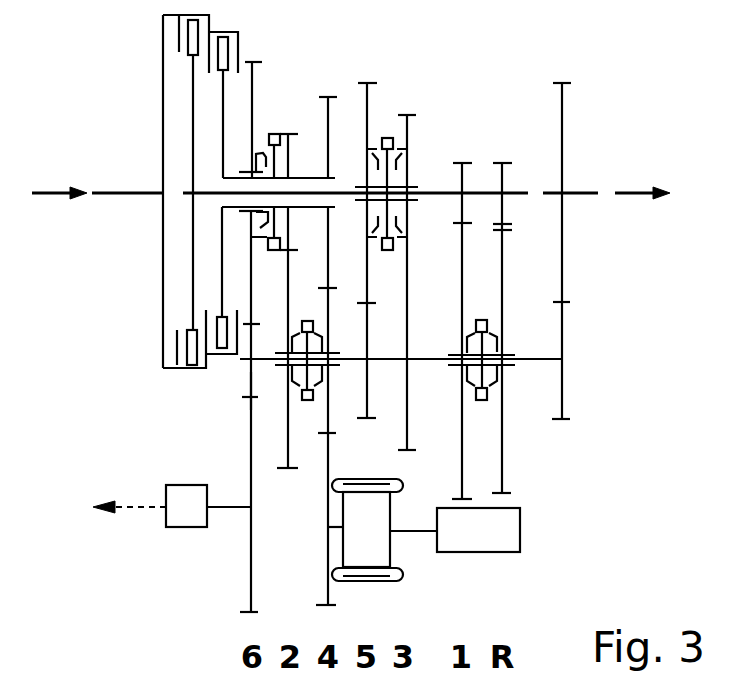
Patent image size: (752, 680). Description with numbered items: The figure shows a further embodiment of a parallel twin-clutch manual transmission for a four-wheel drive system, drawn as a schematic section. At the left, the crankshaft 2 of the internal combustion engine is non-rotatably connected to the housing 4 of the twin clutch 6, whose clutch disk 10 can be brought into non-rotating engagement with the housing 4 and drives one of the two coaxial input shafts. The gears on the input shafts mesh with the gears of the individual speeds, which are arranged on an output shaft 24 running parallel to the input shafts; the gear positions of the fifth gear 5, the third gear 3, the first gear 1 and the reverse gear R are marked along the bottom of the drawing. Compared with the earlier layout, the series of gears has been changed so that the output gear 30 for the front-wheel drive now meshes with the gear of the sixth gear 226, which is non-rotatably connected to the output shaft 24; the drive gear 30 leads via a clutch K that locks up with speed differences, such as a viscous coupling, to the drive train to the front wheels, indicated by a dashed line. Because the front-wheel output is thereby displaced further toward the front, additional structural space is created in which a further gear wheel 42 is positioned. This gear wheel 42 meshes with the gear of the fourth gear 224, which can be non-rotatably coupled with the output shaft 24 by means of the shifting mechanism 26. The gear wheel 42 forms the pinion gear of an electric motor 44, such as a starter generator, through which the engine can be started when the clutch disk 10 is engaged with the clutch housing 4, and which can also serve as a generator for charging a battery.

The housing 4 is at (110, 280).
The clutch disk 10 is at (221, 100).
The gear of the sixth gear 226 is at (250, 382).
The gear of the fourth gear 224 is at (328, 412).
The output shaft 24 is at (528, 362).
The shifting mechanism 26 is at (307, 400).
The drive gear 30 is at (250, 567).
The gear wheel 42 is at (326, 543).
The electric motor 44 is at (390, 556).
The twin clutch 6 is at (251, 305).
The crankshaft 2 is at (287, 337).
The shaft of 5th gear 5 is at (367, 250).
The shaft of 3rd gear 3 is at (407, 282).
The shaft of 1st gear 1 is at (462, 331).
The reverse gear shaft R is at (502, 328).
The clutch K is at (171, 506).